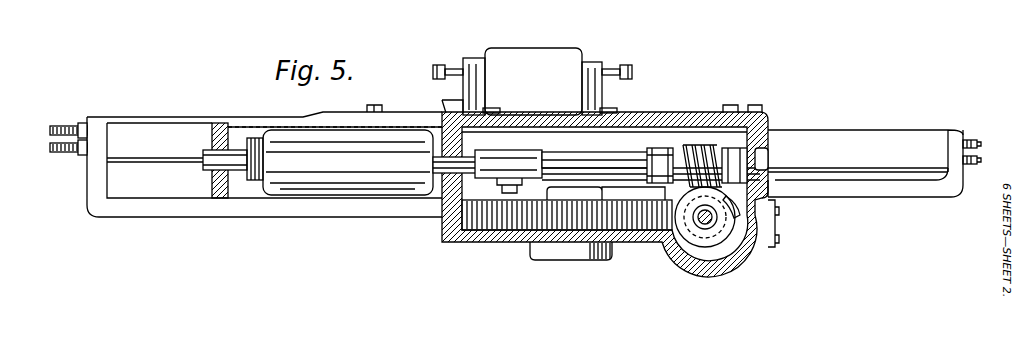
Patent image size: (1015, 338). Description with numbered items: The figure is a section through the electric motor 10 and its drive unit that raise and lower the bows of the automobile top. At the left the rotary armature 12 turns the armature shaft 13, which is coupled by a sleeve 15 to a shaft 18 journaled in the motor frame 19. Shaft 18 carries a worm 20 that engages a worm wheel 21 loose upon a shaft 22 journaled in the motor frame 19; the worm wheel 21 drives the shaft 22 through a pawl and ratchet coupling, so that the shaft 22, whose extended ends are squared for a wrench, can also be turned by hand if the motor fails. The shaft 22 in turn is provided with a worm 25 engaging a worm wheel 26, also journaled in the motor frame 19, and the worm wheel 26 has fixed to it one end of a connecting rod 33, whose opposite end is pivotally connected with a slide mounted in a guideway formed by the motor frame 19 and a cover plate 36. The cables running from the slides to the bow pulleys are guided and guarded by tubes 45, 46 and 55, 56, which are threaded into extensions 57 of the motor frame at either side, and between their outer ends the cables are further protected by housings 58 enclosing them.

The electric motor 10 is at (525, 176).
The rotary armature 12 is at (362, 162).
The armature shaft 13 is at (206, 156).
The sleeve 15 is at (508, 166).
The shaft 18 is at (572, 168).
The motor frame 19 is at (651, 240).
The worm 20 is at (696, 148).
The worm wheel 21 is at (739, 213).
The shaft 22 is at (706, 224).
The worm 25 is at (698, 224).
The worm wheel 26 is at (527, 232).
The connecting rod 33 is at (612, 170).
The cover plate 36 is at (668, 109).
The tube 45 is at (78, 128).
The tube 46 is at (975, 137).
The tube 55 is at (76, 149).
The tube 56 is at (971, 164).
The extensions of the motor frame 57 is at (166, 213).
The housing 58 is at (168, 126).